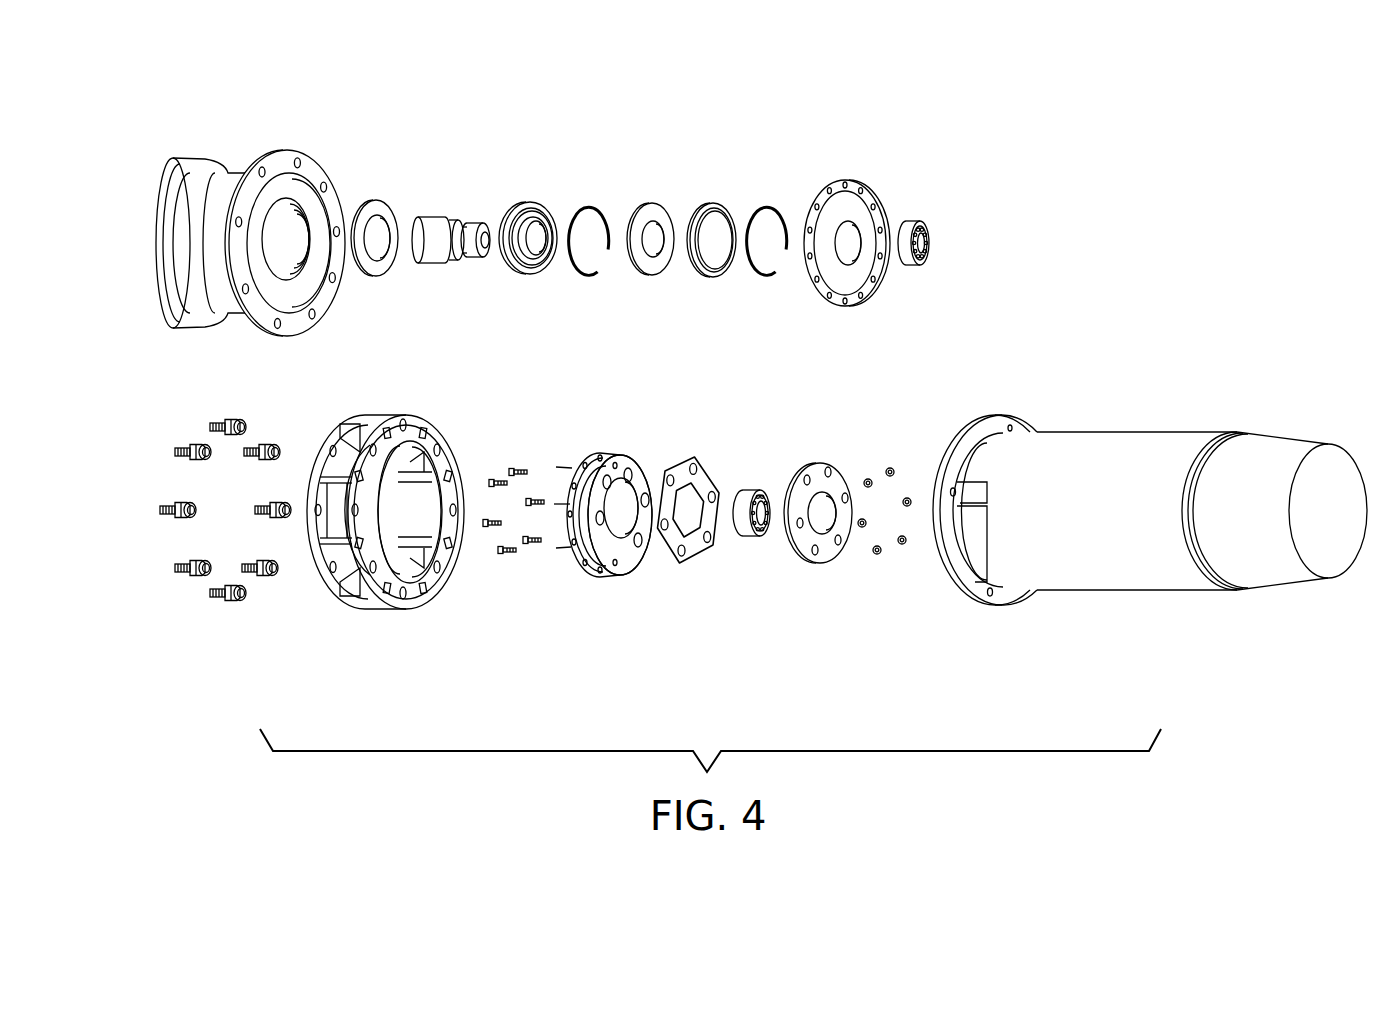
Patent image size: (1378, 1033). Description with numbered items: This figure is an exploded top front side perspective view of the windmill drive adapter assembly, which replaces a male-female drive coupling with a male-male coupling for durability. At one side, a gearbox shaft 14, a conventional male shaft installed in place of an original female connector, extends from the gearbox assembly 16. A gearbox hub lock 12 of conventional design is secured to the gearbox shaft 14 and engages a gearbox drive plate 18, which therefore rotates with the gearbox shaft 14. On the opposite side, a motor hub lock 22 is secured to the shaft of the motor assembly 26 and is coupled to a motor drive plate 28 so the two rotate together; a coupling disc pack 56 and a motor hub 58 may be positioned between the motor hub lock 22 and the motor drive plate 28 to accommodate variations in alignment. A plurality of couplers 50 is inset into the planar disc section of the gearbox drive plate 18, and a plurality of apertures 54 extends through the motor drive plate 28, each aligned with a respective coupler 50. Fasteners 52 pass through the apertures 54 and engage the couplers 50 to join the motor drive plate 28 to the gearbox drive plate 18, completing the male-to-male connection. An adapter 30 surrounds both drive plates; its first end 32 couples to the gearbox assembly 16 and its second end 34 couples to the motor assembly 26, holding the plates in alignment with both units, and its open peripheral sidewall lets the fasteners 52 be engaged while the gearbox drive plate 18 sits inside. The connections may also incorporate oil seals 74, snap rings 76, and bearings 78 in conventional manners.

The gearbox hub lock 12 is at (910, 223).
The gearbox shaft 14 is at (483, 224).
The gearbox assembly 16 is at (238, 170).
The gearbox drive plate 18 is at (857, 182).
The motor hub lock 22 is at (747, 537).
The motor assembly 26 is at (1115, 592).
The motor drive plate 28 is at (627, 552).
The adapter 30 is at (370, 620).
The first end 32 is at (410, 607).
The second end 34 is at (327, 583).
The couplers 50 is at (851, 178).
The fasteners 52 is at (597, 450).
The apertures 54 is at (623, 448).
The coupling disc pack 56 is at (704, 450).
The motor hub 58 is at (838, 472).
The oil seals 74 is at (650, 203).
The snap rings 76 is at (597, 205).
The bearings 78 is at (530, 202).